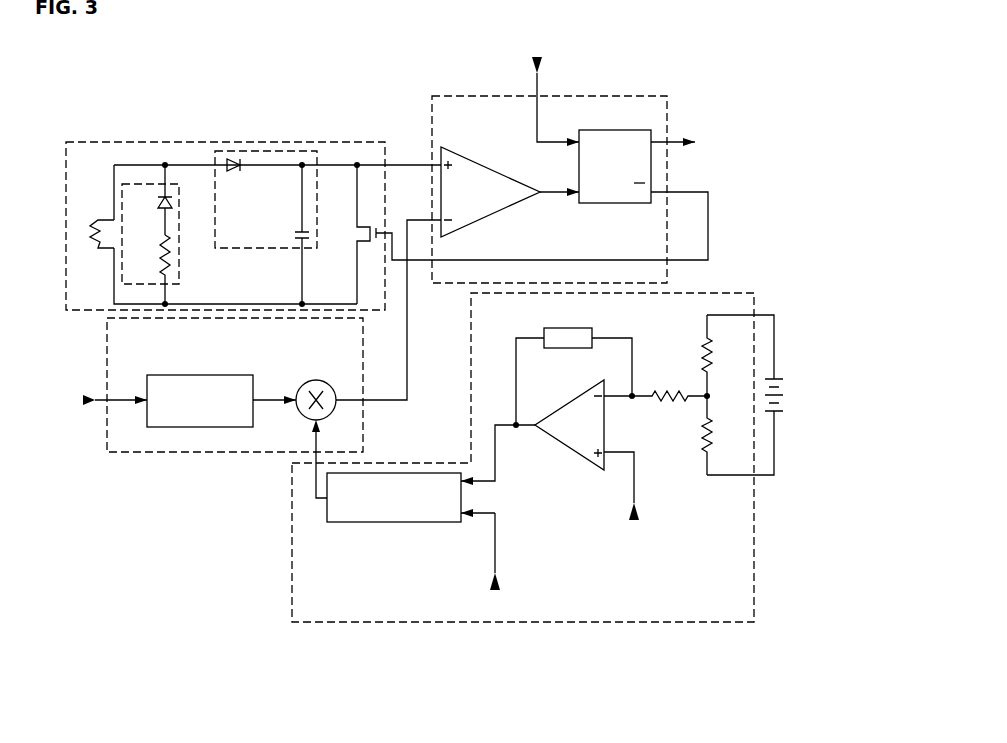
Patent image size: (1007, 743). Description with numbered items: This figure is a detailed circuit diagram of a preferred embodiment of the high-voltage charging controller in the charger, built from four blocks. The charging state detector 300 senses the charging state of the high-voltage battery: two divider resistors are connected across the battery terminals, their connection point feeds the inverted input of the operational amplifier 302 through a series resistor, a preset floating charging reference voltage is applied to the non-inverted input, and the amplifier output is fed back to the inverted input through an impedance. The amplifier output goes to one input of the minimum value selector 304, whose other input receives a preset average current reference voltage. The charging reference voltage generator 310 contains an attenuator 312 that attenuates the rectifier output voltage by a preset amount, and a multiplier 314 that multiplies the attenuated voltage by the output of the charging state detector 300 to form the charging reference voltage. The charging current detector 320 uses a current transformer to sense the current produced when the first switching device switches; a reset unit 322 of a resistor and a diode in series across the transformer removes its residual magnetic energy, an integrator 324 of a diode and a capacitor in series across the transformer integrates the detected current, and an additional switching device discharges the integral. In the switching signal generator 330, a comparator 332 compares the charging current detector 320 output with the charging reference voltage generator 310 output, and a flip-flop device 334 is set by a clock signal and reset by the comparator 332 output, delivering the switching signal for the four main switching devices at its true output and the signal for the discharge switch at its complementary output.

The charging state detector 300 is at (754, 540).
The operational amplifier 302 is at (567, 452).
The minimum value selector 304 is at (400, 522).
The charging reference voltage generator 310 is at (107, 365).
The attenuator 312 is at (220, 375).
The multiplier 314 is at (318, 379).
The charging current detector 320 is at (338, 142).
The reset unit 322 is at (178, 258).
The integrator 324 is at (243, 248).
The switching signal generator 330 is at (605, 96).
The comparator 332 is at (497, 213).
The flip-flop device 334 is at (610, 203).